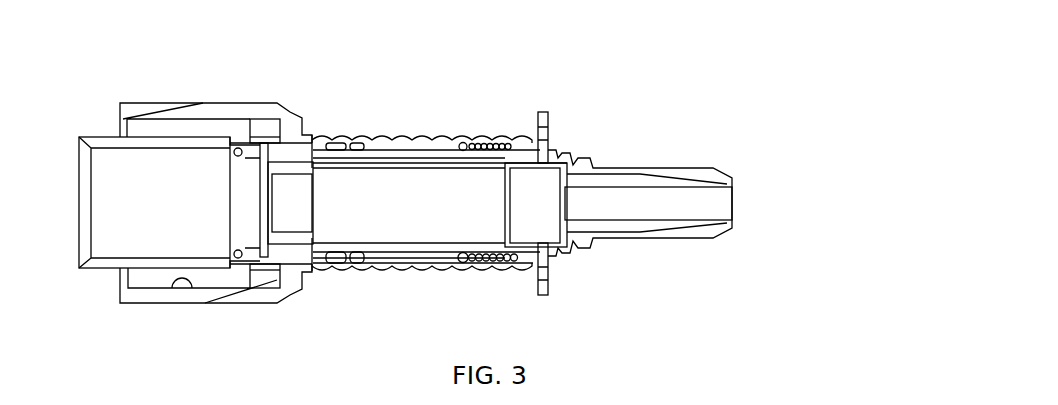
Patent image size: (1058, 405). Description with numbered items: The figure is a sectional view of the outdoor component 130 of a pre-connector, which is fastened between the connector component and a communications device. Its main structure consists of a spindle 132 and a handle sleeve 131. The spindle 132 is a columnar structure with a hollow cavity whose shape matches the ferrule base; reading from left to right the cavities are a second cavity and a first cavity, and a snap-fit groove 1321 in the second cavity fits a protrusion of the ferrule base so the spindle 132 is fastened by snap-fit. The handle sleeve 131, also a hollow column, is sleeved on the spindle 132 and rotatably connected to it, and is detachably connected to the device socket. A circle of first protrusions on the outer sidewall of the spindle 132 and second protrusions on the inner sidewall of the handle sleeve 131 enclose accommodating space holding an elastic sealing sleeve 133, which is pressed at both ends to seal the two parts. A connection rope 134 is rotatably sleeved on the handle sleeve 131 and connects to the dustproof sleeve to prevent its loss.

The outdoor component 130 is at (788, 198).
The handle sleeve 131 is at (208, 103).
The snap-fit groove 1321 is at (263, 140).
The spindle 132 is at (392, 160).
The elastic sealing sleeve 133 is at (491, 141).
The connection rope 134 is at (552, 142).